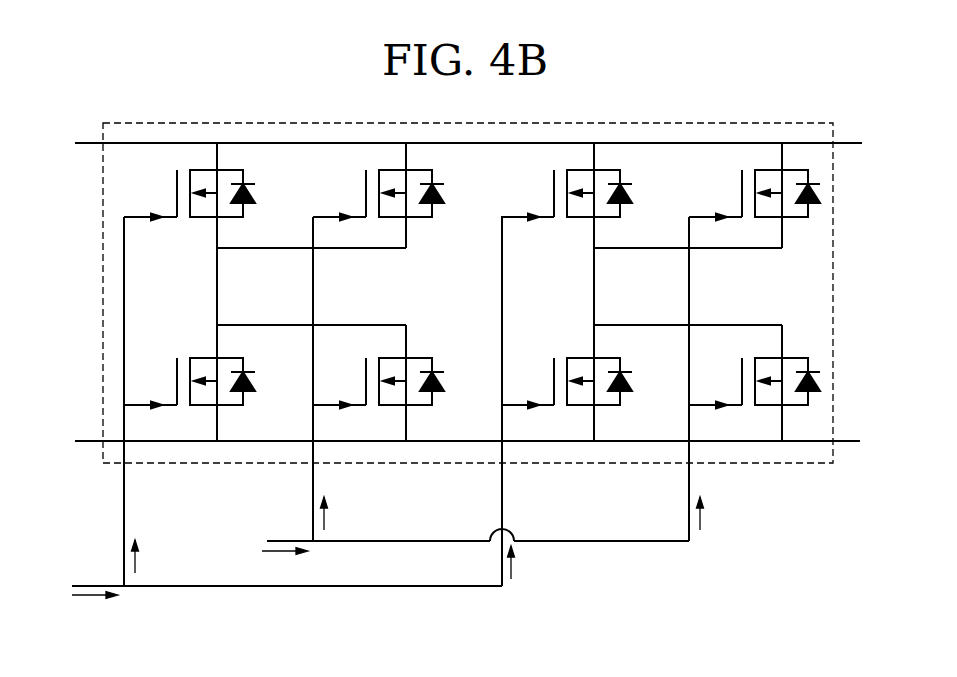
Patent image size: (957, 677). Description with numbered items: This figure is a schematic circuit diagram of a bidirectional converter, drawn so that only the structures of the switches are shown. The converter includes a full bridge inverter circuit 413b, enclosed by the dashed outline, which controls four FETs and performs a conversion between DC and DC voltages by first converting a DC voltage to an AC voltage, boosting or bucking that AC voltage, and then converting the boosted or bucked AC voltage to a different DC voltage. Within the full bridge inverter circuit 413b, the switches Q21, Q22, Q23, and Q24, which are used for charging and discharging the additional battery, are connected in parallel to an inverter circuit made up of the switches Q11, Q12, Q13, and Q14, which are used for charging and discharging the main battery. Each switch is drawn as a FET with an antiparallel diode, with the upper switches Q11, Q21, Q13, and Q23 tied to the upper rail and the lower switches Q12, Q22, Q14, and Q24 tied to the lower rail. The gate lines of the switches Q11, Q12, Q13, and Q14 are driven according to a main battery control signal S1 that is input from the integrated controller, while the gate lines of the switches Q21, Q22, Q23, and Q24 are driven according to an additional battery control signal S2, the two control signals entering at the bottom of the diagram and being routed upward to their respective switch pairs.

The full bridge inverter circuit 413b is at (660, 123).
The switch Q11 is at (189, 183).
The switch Q12 is at (189, 371).
The switch Q21 is at (378, 183).
The switch Q22 is at (378, 371).
The switch Q13 is at (566, 183).
The switch Q14 is at (566, 371).
The switch Q23 is at (754, 183).
The switch Q24 is at (754, 371).
The main battery control signal S1 is at (95, 609).
The additional battery control signal S2 is at (285, 564).